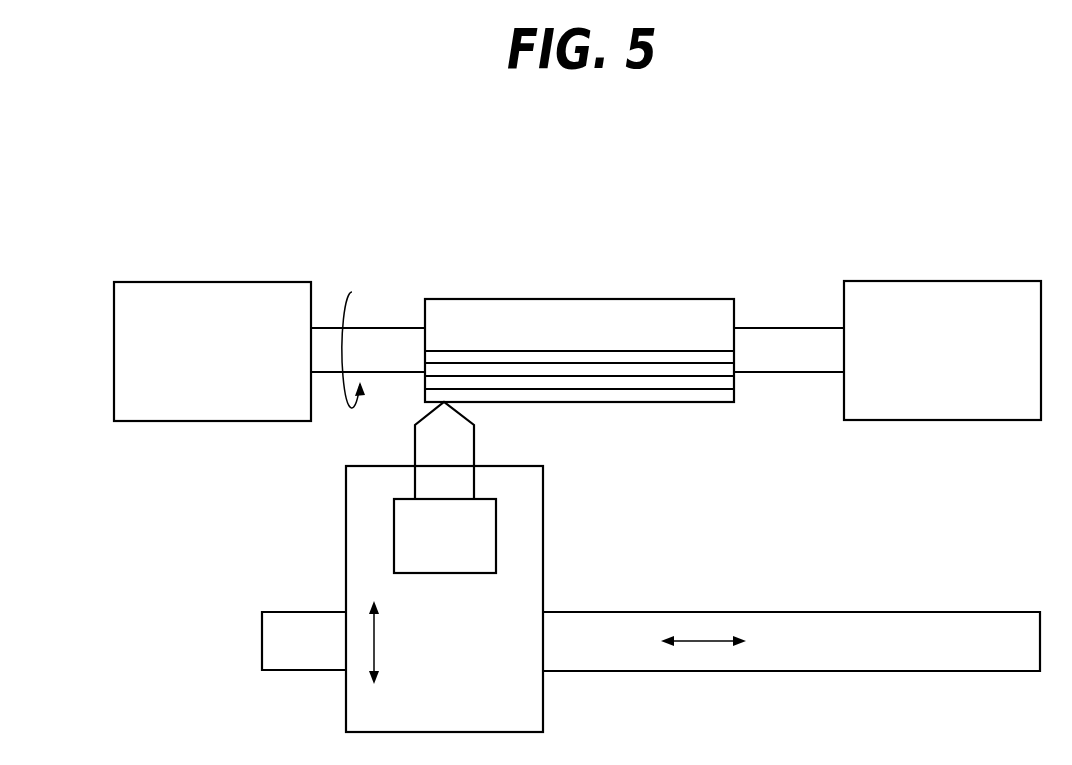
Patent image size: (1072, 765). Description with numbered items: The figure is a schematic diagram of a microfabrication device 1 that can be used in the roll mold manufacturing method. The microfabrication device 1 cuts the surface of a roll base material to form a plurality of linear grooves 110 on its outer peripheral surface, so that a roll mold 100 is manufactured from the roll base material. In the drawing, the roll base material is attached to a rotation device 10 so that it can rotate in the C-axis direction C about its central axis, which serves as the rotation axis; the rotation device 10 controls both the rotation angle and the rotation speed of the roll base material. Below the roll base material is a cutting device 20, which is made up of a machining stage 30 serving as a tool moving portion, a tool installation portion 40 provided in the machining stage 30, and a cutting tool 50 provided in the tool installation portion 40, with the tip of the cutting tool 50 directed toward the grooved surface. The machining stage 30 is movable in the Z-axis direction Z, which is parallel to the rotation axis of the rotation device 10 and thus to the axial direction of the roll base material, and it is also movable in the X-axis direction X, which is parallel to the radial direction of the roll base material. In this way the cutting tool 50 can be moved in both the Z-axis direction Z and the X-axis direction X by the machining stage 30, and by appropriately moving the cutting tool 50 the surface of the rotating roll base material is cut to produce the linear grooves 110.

The microfabrication device 1 is at (760, 180).
The rotation device 10 is at (198, 282).
The roll mold 100 is at (588, 299).
The linear grooves 110 is at (556, 351).
The cutting device 20 is at (568, 471).
The machining stage 30 is at (346, 497).
The tool installation portion 40 is at (394, 540).
The cutting tool 50 is at (474, 442).
The C-axis direction C is at (358, 312).
The X-axis direction X is at (372, 627).
The Z-axis direction Z is at (703, 643).